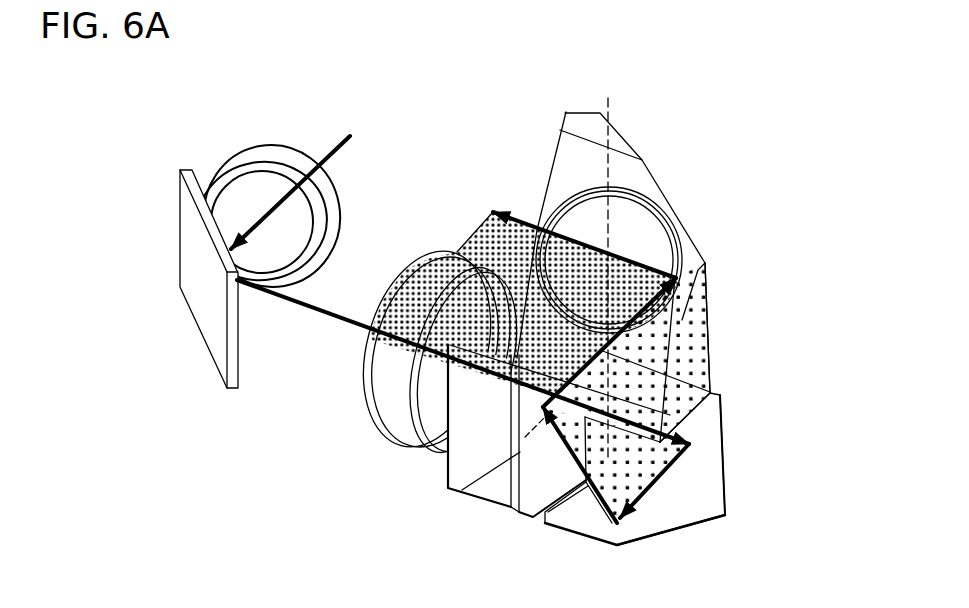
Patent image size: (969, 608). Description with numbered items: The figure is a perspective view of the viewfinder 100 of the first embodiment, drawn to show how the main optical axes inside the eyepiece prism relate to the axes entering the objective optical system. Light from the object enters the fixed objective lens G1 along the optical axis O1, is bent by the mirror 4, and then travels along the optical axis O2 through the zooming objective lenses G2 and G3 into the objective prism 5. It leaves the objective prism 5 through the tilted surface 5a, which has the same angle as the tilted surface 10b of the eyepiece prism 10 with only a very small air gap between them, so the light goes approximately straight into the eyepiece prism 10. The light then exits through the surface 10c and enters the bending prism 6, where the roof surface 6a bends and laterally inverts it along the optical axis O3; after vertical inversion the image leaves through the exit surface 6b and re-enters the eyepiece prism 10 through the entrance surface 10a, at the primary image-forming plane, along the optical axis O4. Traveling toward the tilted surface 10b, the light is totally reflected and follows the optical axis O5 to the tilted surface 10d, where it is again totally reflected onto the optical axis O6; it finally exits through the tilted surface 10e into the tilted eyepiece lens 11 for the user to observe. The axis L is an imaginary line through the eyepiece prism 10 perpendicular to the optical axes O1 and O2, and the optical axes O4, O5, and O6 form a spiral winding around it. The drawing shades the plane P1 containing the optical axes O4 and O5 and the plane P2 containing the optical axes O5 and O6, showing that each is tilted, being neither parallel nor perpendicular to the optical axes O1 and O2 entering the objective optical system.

The viewfinder 100 is at (222, 104).
The mirror 4 is at (202, 298).
The fixed objective lens G1 is at (327, 210).
The objective lens G2 is at (375, 390).
The objective lens G3 is at (427, 445).
The objective prism 5 is at (465, 460).
The tilted surface 5a is at (507, 503).
The bending prism 6 is at (593, 525).
The roof surface 6a is at (690, 513).
The exit surface 6b is at (577, 510).
The eyepiece prism 10 is at (705, 318).
The entrance surface 10a is at (537, 523).
The tilted surface 10b is at (497, 490).
The surface 10c is at (695, 440).
The tilted surface 10d is at (720, 296).
The tilted surface 10e is at (712, 260).
The eyepiece lens 11 is at (640, 217).
The axis L is at (610, 113).
The plane P1 is at (690, 360).
The plane P2 is at (483, 238).
The optical axis O1 is at (333, 150).
The optical axis O2 is at (293, 293).
The optical axis O3 is at (690, 470).
The optical axis O4 is at (563, 437).
The optical axis O5 is at (708, 375).
The optical axis O6 is at (520, 210).